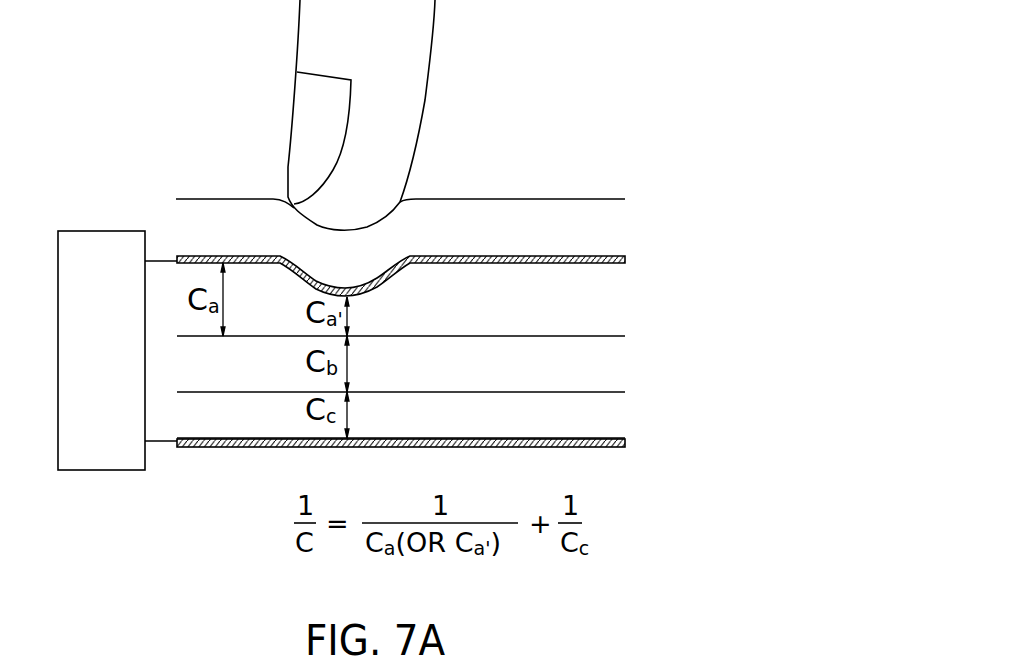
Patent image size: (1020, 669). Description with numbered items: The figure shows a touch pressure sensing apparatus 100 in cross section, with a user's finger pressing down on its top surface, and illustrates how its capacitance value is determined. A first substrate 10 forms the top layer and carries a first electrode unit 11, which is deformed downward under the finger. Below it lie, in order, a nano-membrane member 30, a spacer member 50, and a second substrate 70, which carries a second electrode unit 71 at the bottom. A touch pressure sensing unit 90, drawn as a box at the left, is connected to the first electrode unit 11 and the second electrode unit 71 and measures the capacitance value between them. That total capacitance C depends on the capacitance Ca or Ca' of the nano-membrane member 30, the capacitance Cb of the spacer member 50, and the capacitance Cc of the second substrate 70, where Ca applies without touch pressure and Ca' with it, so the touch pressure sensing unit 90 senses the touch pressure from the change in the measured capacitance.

The touch sensor device 100 is at (579, 127).
The first substrate 10 is at (600, 227).
The first electrode unit 11 is at (617, 258).
The nano-membrane member 30 is at (612, 320).
The spacer member 50 is at (612, 363).
The second substrate 70 is at (607, 415).
The second electrode unit 71 is at (625, 443).
The touch pressure sensing unit 90 is at (102, 470).